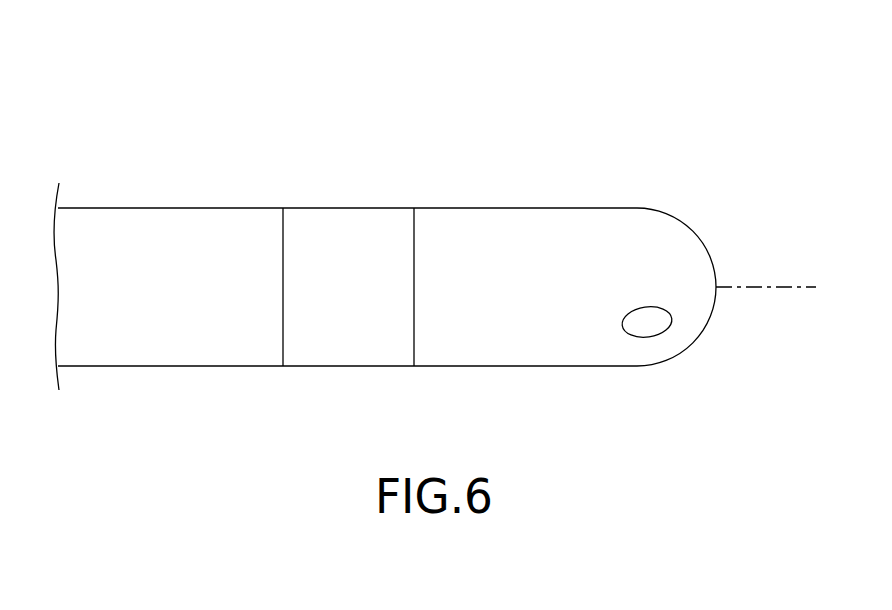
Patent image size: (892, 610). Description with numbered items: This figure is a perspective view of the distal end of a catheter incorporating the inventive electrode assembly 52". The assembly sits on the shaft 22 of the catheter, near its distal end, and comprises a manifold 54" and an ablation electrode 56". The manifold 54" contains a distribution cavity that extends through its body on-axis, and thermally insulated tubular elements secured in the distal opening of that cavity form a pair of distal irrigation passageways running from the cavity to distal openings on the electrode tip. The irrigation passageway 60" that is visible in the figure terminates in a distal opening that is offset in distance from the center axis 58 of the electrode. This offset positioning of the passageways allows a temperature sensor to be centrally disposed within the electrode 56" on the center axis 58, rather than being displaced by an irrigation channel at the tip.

The shaft 22 is at (193, 186).
The electrode assembly 52 is at (565, 195).
The manifold 54 is at (342, 185).
The ablation electrode 56 is at (478, 185).
The center axis 58 is at (805, 287).
The irrigation passageway 60 is at (647, 322).